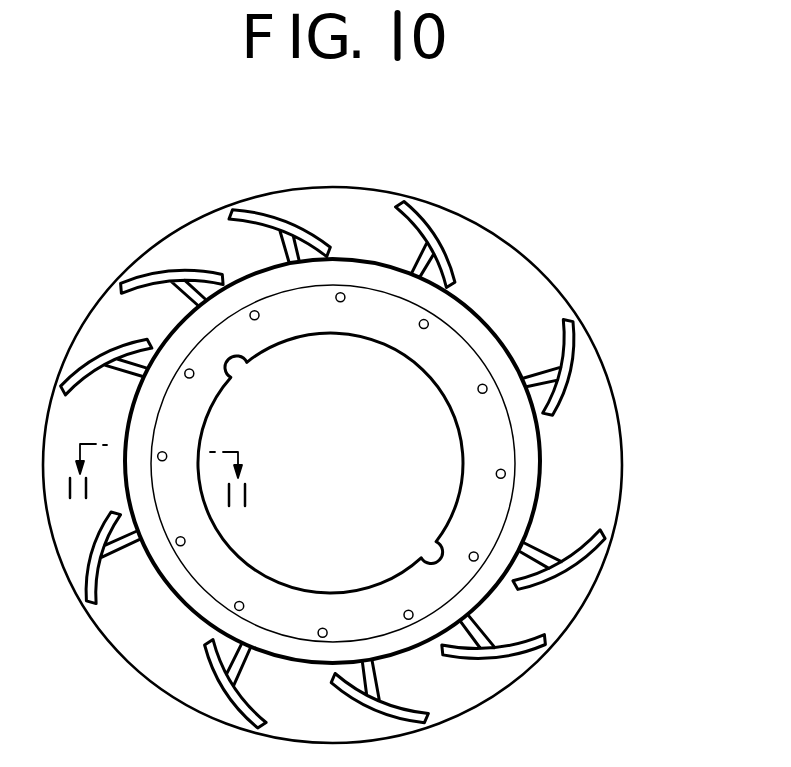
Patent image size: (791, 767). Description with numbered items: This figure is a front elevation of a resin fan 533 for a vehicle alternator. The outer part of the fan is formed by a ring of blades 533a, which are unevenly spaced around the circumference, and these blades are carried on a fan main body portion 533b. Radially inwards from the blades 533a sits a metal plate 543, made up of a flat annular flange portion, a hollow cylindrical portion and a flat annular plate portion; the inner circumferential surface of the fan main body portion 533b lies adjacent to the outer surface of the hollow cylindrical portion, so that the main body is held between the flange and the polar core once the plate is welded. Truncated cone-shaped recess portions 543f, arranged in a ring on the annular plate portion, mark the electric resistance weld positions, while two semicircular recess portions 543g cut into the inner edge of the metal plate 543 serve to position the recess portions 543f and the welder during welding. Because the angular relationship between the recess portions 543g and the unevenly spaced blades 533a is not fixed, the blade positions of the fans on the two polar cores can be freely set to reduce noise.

The resin fan 533 is at (332, 428).
The blades 533a is at (455, 263).
The fan main body portion 533b is at (125, 643).
The metal plate 543 is at (378, 463).
The recess portions 543f is at (407, 619).
The semicircular recess portions 543g is at (236, 357).